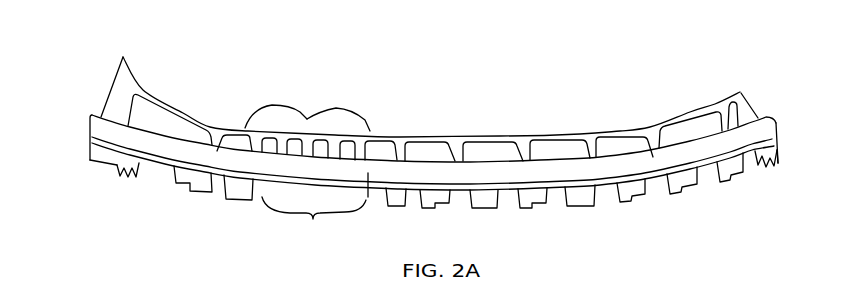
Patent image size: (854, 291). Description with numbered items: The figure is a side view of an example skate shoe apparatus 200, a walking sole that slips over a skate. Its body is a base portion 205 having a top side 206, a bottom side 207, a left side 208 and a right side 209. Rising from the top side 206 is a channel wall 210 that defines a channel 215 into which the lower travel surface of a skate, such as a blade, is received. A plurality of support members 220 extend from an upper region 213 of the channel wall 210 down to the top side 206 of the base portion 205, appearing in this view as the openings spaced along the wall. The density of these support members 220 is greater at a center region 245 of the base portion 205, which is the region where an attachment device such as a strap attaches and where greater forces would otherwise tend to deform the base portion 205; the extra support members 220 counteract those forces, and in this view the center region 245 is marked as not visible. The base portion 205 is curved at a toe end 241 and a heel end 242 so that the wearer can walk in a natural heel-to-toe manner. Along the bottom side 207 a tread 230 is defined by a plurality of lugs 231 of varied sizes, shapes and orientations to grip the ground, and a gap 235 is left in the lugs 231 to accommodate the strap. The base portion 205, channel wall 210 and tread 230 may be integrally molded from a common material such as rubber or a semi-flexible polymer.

The skate shoe apparatus 200 is at (507, 71).
The base portion 205 is at (82, 122).
The top side 206 is at (433, 160).
The bottom side 207 is at (511, 193).
The left side 208 is at (391, 117).
The right side 209 is at (368, 197).
The channel wall 210 is at (671, 118).
The upper region 213 is at (743, 95).
The channel 215 is at (526, 128).
The support members 220 is at (305, 130).
The tread 230 is at (626, 210).
The lugs 231 is at (170, 181).
The gap 235 is at (270, 202).
The toe end 241 is at (788, 157).
The heel end 242 is at (80, 158).
The center region 245 is at (307, 119).